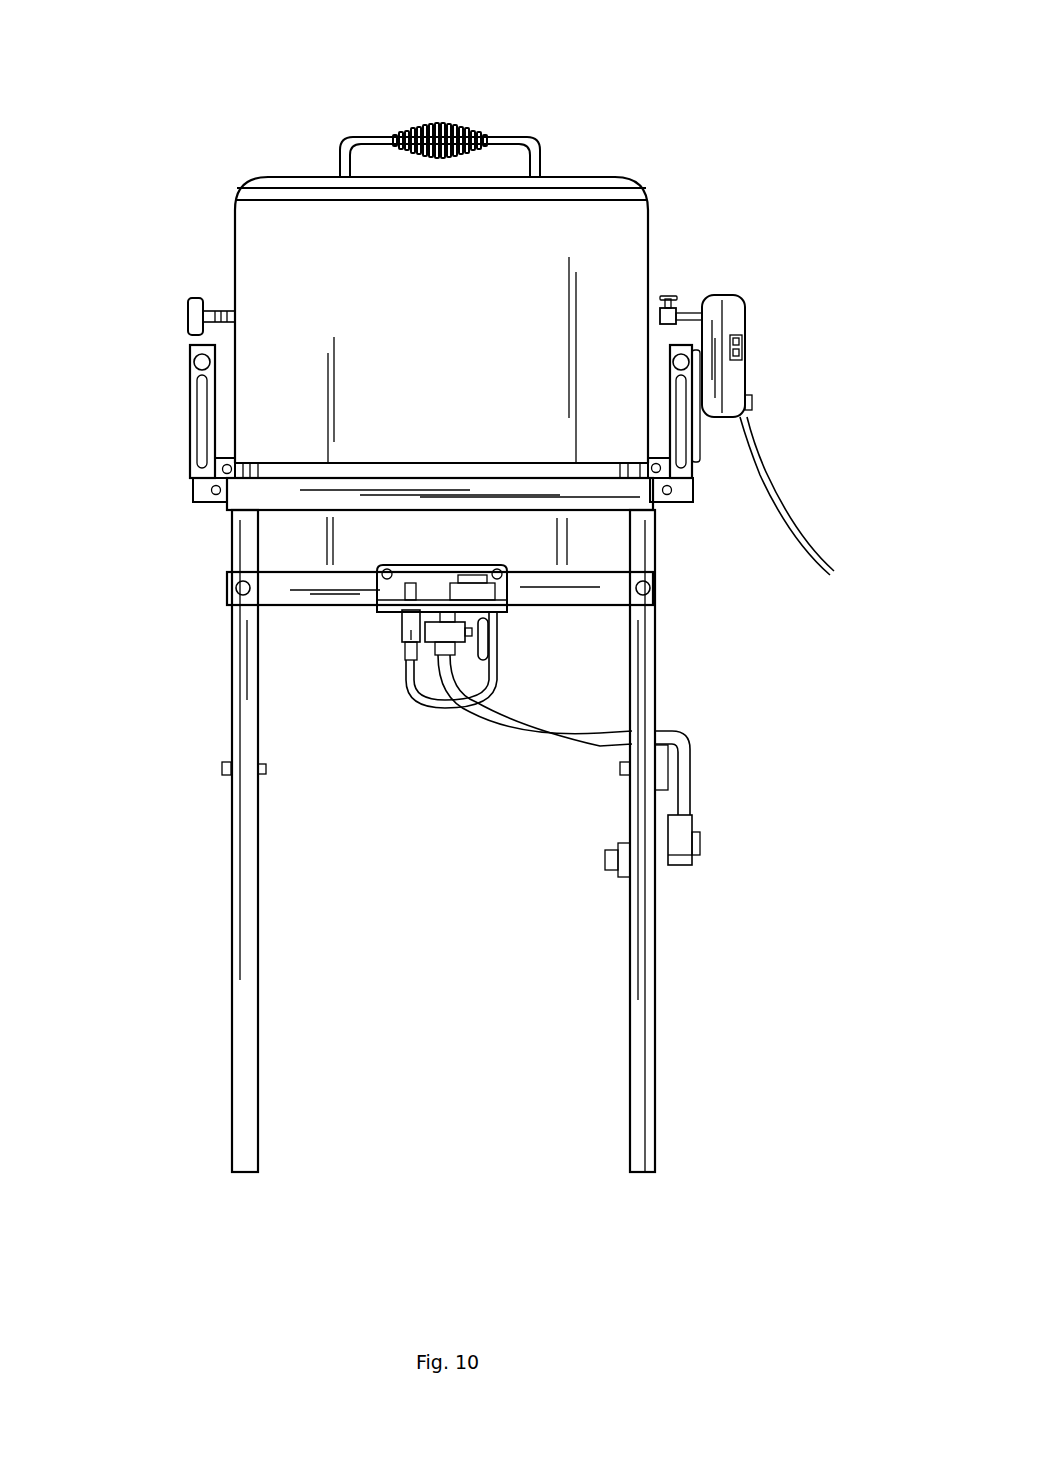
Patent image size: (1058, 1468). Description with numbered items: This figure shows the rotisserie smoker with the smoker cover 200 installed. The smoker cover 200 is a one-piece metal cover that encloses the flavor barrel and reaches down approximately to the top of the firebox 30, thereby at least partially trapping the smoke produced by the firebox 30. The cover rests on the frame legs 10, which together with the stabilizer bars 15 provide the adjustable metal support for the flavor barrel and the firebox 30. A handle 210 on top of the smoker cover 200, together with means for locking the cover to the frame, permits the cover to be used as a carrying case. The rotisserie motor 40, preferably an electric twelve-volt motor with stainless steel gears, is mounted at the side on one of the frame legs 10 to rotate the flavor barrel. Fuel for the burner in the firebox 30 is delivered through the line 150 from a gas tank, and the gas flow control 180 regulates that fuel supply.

The handle 210 is at (520, 128).
The smoker cover 200 is at (610, 280).
The rotisserie motor 40 is at (737, 312).
The firebox 30 is at (590, 541).
The stabilizer bars 15 is at (228, 495).
The frame legs 10 is at (243, 1112).
The gas flow control 180 is at (490, 583).
The line 150 is at (678, 765).